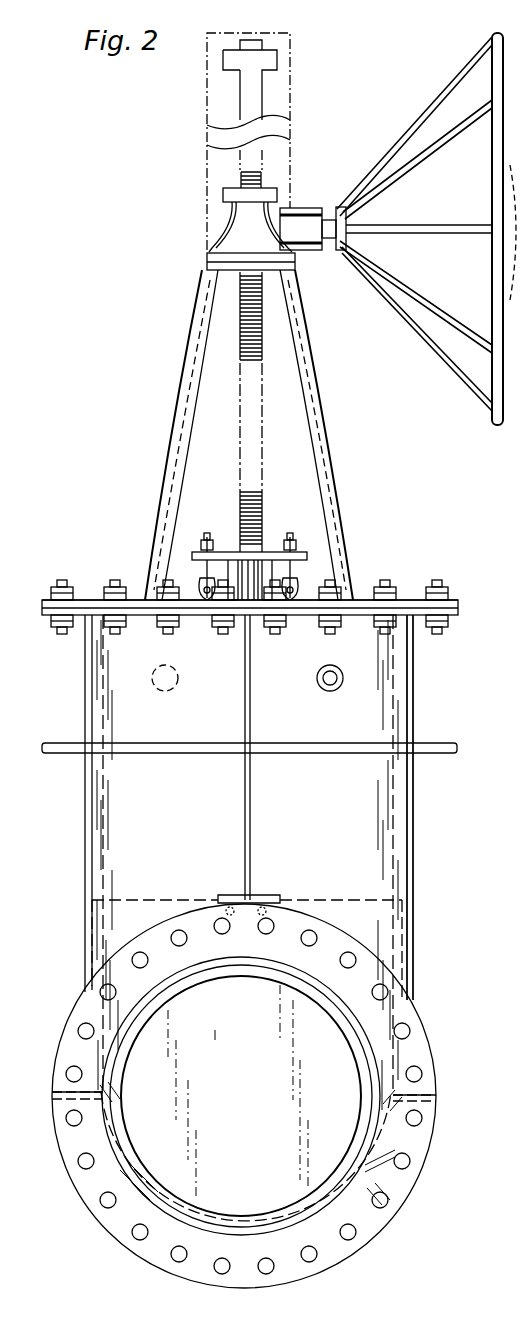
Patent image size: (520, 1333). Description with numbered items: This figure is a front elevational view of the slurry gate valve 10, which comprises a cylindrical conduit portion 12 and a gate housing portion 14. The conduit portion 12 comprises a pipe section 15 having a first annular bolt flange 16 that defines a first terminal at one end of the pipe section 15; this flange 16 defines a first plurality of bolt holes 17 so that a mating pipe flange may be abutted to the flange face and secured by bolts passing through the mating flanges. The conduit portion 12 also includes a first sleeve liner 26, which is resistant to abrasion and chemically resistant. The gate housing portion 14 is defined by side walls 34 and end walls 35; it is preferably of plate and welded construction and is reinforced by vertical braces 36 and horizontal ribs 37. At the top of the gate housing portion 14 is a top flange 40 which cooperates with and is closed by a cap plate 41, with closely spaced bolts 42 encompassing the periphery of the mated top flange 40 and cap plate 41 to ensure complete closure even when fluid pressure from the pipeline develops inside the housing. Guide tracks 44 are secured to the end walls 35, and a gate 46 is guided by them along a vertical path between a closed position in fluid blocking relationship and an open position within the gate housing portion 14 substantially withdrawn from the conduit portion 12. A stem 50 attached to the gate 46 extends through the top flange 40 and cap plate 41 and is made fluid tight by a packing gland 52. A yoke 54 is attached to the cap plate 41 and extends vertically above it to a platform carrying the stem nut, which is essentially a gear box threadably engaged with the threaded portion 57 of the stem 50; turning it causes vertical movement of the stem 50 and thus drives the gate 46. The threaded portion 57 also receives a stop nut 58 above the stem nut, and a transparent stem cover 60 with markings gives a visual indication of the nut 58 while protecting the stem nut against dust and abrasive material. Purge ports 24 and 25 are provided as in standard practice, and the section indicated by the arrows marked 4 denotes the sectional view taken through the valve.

The slurry gate valve 10 is at (180, 396).
The yoke 54 is at (318, 436).
The stem cover 60 is at (290, 152).
The stop nut 58 is at (275, 188).
The threaded portion 57 is at (263, 497).
The stem 50 is at (262, 552).
The packing gland 52 is at (268, 582).
The top flange 40 is at (452, 616).
The cap plate 41 is at (455, 600).
The bolts 42 is at (386, 582).
The gate housing portion 14 is at (386, 731).
The vertical braces 36 is at (252, 712).
The horizontal ribs 37 is at (452, 745).
The purge port 25 is at (150, 678).
The purge port 24 is at (320, 672).
The guide tracks 44 is at (104, 822).
The side walls 34 is at (372, 826).
The end walls 35 is at (414, 846).
The section line 4- 4 is at (248, 870).
The first annular bolt flange 16 is at (400, 1190).
The first plurality of bolt holes 17 is at (385, 1203).
The pipe section 15 is at (378, 1060).
The first sleeve liner 26 is at (357, 1035).
The cylindrical conduit portion 12 is at (392, 1137).
The gate 46 is at (243, 1061).